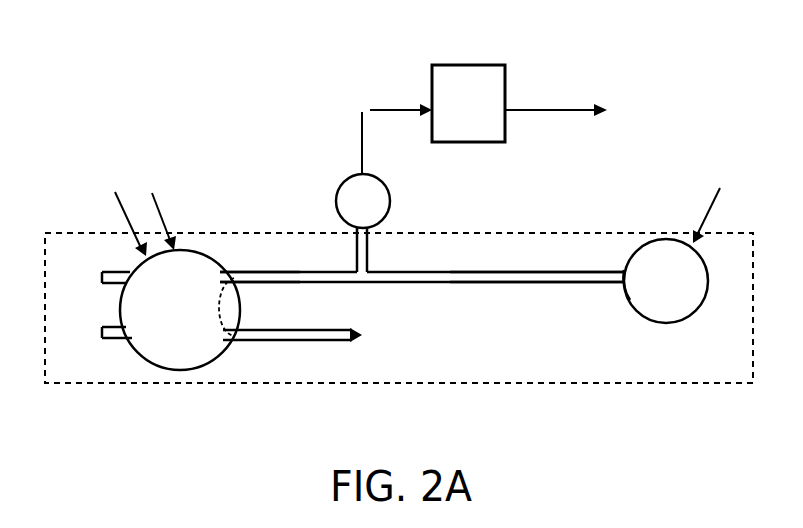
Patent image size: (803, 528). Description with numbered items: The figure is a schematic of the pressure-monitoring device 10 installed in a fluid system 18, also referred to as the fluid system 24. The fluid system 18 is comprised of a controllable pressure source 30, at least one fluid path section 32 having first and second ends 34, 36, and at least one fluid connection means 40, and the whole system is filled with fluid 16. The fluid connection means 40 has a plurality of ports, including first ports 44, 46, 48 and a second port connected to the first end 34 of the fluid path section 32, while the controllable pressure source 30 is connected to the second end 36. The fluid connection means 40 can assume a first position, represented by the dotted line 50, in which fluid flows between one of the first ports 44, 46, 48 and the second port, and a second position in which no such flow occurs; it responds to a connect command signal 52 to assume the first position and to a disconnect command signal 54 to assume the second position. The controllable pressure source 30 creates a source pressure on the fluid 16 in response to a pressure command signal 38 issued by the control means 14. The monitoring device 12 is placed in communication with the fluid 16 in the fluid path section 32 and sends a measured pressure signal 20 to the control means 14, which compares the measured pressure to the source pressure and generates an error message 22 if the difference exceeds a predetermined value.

The device for monitoring pressure 10 is at (600, 70).
The monitoring device 12 is at (390, 201).
The control means 14 is at (505, 78).
The fluid 16 is at (418, 284).
The fluid system 18 is at (154, 398).
The measured pressure signal 20 is at (362, 112).
The error message 22 is at (572, 115).
The fluid system 24 is at (565, 384).
The controllable pressure source 30 is at (682, 322).
The fluid path section 32 is at (508, 284).
The first end of fluid path section 34 is at (253, 284).
The second end of fluid path section 36 is at (623, 288).
The pressure command signal 38 is at (720, 198).
The fluid connection means 40 is at (120, 311).
The first port 44 is at (110, 270).
The first port 46 is at (108, 338).
The first port 48 is at (236, 342).
The dotted line representing first position 50 is at (222, 310).
The connect command signal 52 is at (152, 193).
The disconnect command signal 54 is at (115, 192).